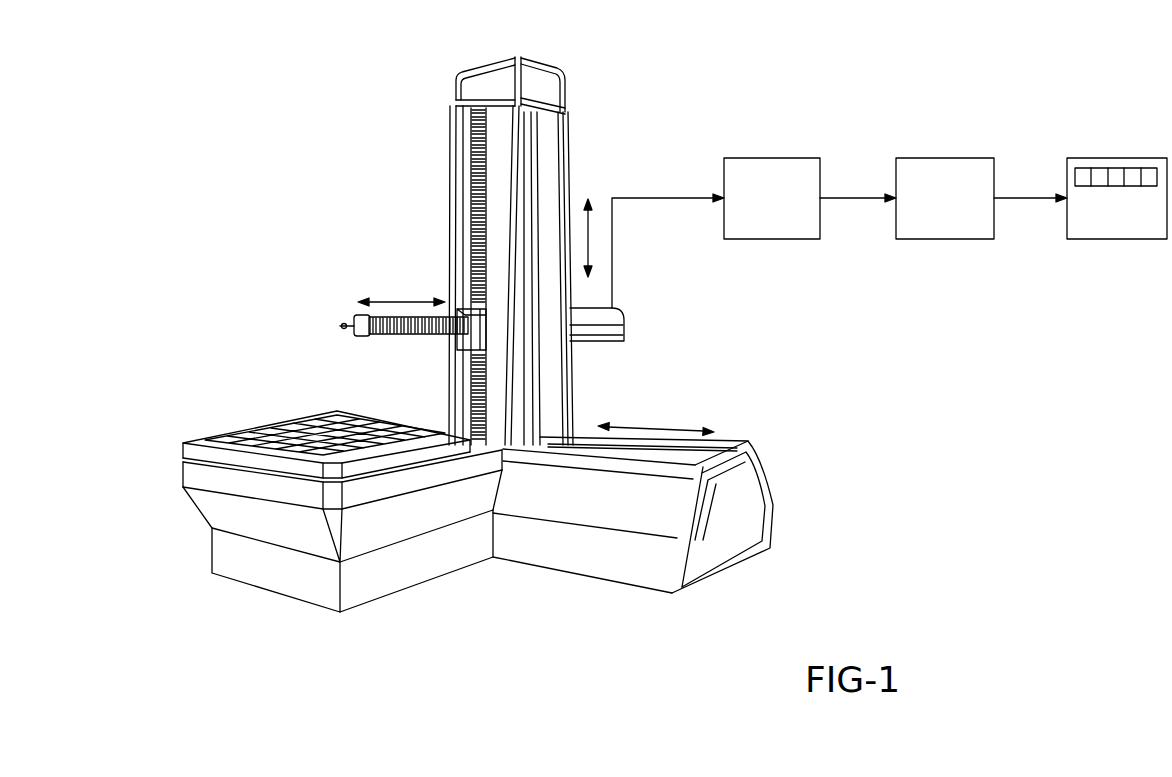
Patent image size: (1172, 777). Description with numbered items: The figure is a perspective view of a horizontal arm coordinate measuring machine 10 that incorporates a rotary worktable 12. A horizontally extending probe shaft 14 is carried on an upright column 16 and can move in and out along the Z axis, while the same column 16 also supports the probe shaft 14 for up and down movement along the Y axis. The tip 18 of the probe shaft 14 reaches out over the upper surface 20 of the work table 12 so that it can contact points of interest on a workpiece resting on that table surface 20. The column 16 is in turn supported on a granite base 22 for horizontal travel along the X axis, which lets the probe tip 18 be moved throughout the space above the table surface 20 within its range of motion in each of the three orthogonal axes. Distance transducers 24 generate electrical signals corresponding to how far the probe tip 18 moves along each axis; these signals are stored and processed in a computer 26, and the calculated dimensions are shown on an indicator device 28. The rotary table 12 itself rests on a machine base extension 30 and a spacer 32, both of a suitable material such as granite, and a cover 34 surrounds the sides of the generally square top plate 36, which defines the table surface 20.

The horizontal arm coordinate measuring machine 10 is at (746, 356).
The rotary worktable 12 is at (168, 447).
The probe shaft 14 is at (382, 334).
The upright column 16 is at (582, 156).
The tip 18 is at (341, 326).
The upper surface 20 is at (306, 438).
The granite base 22 is at (628, 524).
The distance transducers 24 is at (802, 130).
The computer 26 is at (963, 158).
The indicator device 28 is at (1130, 129).
The machine base extension 30 is at (206, 548).
The spacer 32 is at (370, 545).
The cover 34 is at (179, 476).
The top plate 36 is at (226, 433).